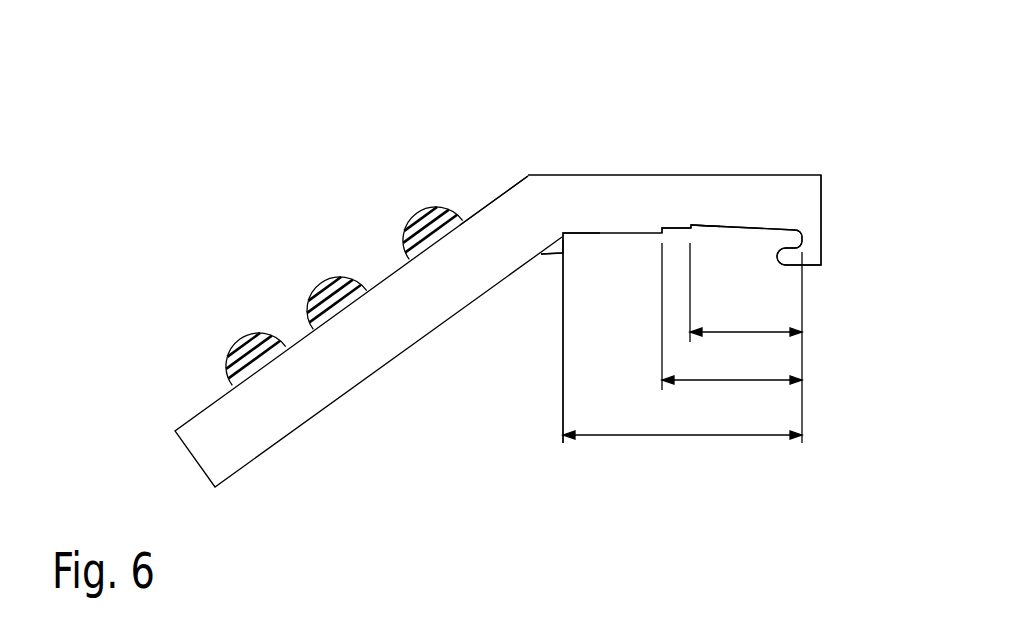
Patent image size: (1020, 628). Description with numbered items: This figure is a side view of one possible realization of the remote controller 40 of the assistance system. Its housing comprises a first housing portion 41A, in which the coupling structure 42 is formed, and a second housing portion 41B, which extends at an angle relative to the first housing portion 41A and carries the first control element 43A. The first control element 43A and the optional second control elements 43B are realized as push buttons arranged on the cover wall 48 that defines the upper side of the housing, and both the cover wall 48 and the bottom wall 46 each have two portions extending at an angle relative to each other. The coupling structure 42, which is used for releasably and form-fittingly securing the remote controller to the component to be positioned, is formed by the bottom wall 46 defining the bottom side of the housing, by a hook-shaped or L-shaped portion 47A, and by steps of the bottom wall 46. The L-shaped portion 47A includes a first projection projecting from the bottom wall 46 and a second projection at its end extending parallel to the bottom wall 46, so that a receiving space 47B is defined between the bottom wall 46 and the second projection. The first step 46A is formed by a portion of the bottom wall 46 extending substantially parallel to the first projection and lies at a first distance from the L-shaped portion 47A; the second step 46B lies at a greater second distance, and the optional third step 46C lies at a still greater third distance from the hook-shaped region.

The remote controller 40 is at (222, 205).
The first housing portion 41A is at (664, 175).
The second housing portion 41B is at (367, 357).
The coupling structure 42 is at (595, 253).
The first control element 43A is at (232, 353).
The second control elements 43B is at (320, 290).
The bottom wall 46 is at (718, 226).
The first step 46A is at (690, 225).
The second step 46B is at (661, 227).
The third step 46C is at (551, 243).
The L-shaped portion 47A is at (815, 258).
The receiving space 47B is at (785, 238).
The cover wall 48 is at (497, 215).